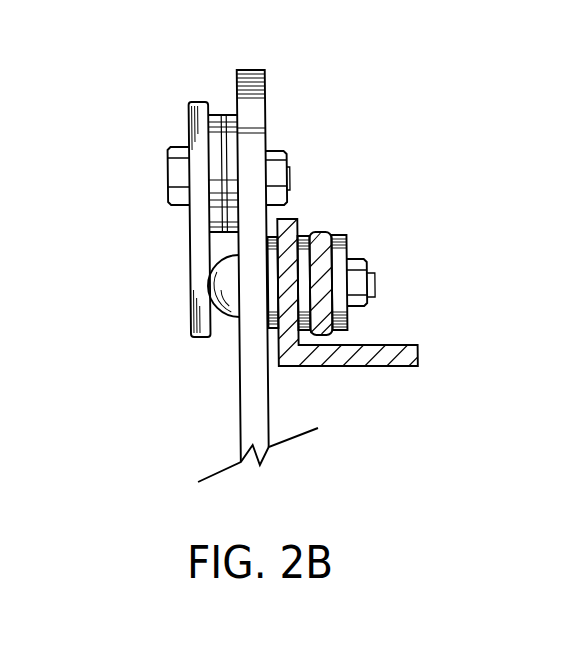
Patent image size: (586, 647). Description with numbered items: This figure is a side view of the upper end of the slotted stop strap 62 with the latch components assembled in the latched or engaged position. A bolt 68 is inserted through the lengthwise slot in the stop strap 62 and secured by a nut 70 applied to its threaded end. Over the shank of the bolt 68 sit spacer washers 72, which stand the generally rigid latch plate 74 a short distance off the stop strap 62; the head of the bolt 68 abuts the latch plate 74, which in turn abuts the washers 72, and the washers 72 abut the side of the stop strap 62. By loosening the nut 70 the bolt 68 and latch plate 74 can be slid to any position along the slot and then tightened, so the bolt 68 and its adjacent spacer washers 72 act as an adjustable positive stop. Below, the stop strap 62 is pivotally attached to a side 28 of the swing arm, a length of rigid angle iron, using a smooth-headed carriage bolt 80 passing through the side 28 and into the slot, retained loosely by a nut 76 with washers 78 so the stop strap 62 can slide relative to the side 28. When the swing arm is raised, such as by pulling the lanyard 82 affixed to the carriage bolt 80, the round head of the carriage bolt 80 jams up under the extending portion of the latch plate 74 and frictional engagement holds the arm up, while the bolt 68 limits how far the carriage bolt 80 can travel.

The side 28 is at (380, 365).
The stop strap 62 is at (265, 98).
The bolt 68 is at (167, 173).
The nut 70 is at (283, 150).
The washers 72 is at (223, 115).
The latch plate 74 is at (188, 115).
The nut 76 is at (367, 258).
The washers 78 is at (332, 323).
The carriage bolt 80 is at (233, 320).
The lanyard 82 is at (317, 233).